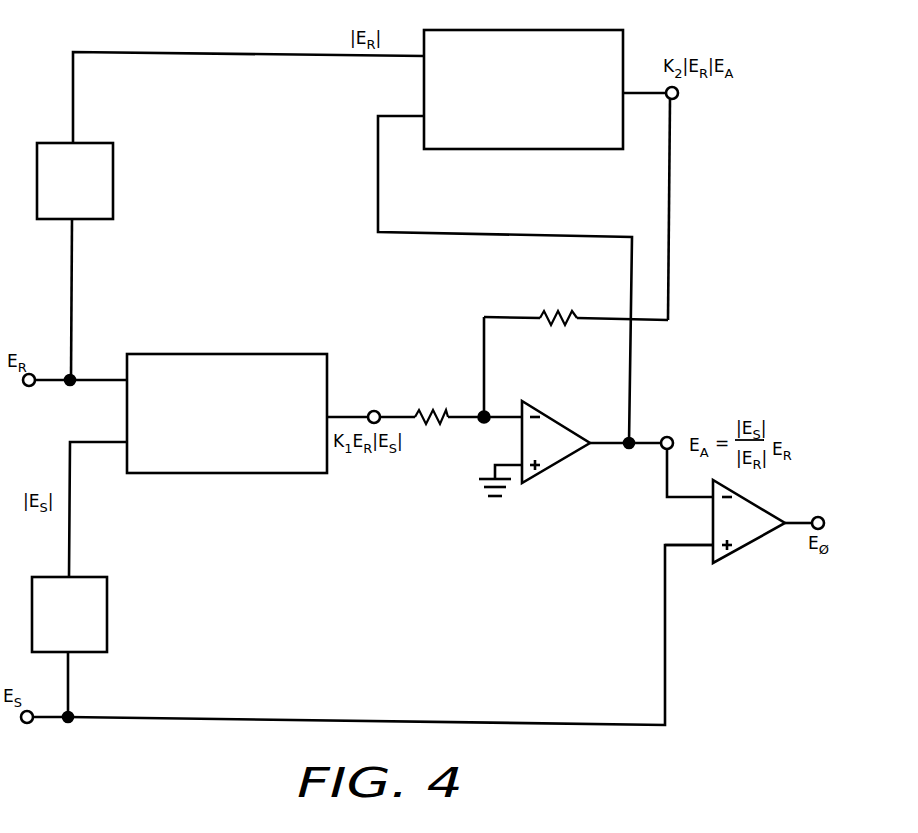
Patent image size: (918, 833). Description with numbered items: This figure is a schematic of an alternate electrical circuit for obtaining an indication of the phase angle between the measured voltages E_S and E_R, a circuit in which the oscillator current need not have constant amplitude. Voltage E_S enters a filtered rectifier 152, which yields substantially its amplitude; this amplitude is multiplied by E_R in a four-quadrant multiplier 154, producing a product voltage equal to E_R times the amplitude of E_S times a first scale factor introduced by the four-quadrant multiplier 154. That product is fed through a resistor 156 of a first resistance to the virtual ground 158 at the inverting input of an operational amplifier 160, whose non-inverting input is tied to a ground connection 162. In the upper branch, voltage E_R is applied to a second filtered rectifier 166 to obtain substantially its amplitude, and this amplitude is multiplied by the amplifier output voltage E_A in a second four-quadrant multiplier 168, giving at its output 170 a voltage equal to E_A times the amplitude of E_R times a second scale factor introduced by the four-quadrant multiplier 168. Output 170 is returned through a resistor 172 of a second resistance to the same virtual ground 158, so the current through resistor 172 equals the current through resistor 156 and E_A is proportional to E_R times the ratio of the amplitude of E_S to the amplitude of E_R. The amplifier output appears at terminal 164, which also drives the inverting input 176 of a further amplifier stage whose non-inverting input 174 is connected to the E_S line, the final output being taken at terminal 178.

The filtered rectifier 152 is at (79, 603).
The four-quadrant multiplier 154 is at (227, 401).
The resistor 156 is at (424, 404).
The virtual ground 158 is at (485, 430).
The operational amplifier 160 is at (557, 441).
The ground connection 162 is at (495, 470).
The output terminal 164 is at (666, 432).
The filtered rectifier 166 is at (83, 169).
The four-quadrant multiplier 168 is at (523, 75).
The output 170 is at (671, 65).
The resistor 172 is at (576, 304).
The non-inverting input 174 is at (670, 545).
The inverting input 176 is at (670, 480).
The output terminal 178 is at (811, 512).